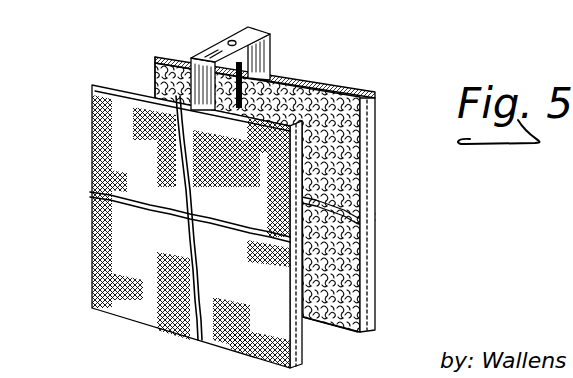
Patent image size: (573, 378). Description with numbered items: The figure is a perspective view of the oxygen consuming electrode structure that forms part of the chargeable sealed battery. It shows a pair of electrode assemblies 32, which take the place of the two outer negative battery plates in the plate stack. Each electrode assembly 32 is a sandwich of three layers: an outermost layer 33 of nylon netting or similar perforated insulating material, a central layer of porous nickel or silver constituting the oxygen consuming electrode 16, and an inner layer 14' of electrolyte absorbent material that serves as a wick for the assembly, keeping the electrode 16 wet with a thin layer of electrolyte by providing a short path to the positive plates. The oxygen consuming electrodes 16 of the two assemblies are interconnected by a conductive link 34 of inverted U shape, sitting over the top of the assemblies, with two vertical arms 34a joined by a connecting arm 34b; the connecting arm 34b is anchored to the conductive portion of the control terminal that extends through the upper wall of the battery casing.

The electrode assembly 32 is at (239, 189).
The outermost layer of nylon netting 33 is at (97, 122).
The conductive link 34 is at (234, 55).
The vertical arm 34a is at (175, 59).
The connecting arm 34b is at (212, 50).
The layer of electrolyte absorbent material 14' is at (284, 208).
The oxygen consuming electrode 16 is at (373, 145).